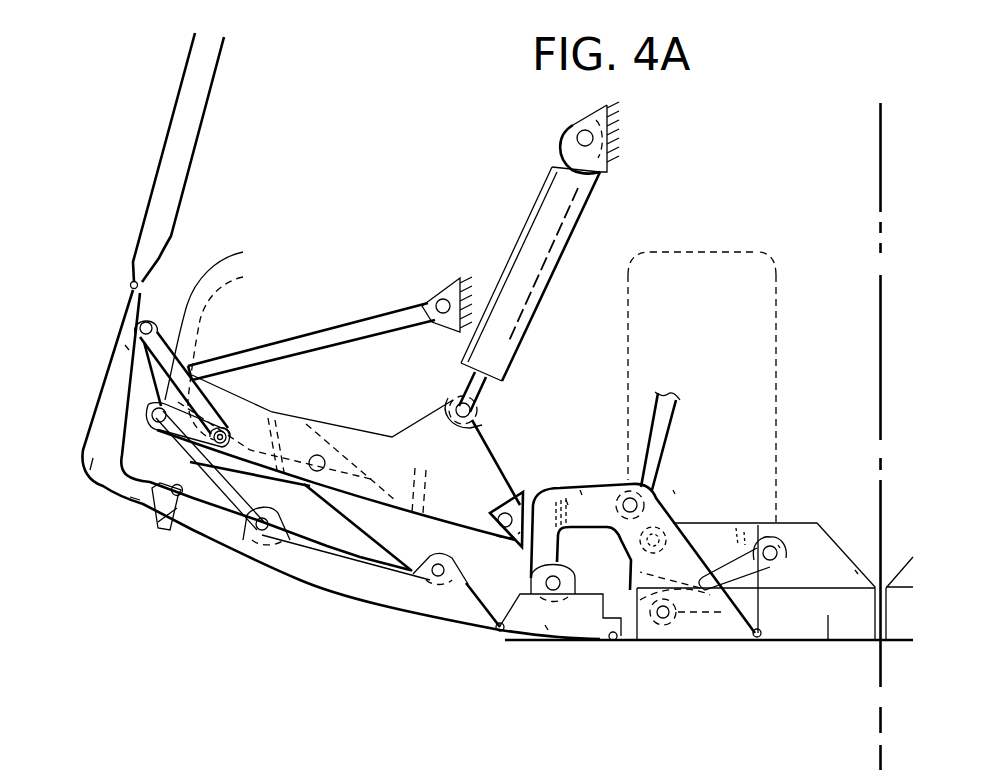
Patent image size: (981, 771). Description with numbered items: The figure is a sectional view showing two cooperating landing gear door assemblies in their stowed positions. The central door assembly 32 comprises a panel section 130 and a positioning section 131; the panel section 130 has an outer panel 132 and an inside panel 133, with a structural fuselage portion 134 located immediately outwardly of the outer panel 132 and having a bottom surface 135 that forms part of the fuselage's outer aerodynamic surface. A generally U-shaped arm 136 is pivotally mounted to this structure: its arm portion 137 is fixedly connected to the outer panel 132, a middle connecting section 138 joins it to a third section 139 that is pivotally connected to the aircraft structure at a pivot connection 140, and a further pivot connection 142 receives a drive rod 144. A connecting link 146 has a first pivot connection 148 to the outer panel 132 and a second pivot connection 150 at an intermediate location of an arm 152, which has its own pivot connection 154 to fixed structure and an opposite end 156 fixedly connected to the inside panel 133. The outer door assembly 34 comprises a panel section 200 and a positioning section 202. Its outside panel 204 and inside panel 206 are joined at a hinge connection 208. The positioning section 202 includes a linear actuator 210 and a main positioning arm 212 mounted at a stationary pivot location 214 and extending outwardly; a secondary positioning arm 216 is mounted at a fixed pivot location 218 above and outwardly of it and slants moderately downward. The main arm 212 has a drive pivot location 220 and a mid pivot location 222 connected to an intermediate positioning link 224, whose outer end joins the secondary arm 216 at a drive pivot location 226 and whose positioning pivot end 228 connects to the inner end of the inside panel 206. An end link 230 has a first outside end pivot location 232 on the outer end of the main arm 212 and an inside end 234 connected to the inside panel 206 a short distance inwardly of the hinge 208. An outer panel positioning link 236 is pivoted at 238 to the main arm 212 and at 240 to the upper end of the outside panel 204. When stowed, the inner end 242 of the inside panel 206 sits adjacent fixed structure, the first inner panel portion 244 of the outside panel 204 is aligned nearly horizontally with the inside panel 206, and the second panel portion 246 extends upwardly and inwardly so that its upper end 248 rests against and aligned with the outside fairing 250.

The door assembly 32 is at (807, 652).
The door assembly 34 is at (244, 573).
The panel section 130 is at (693, 652).
The positioning section 131 is at (692, 525).
The outer panel 132 is at (660, 640).
The inside panel 133 is at (828, 640).
The structural fuselage portion 134 is at (548, 600).
The bottom surface 135 is at (560, 620).
The arm 136 is at (597, 487).
The arm portion 137 is at (673, 490).
The middle connecting section 138 is at (580, 490).
The third section 139 is at (568, 500).
The pivot connection 140 is at (548, 628).
The pivot connection 142 is at (627, 497).
The drive rod 144 is at (668, 413).
The connecting link 146 is at (771, 538).
The first pivot connection 148 is at (656, 618).
The second pivot connection 150 is at (786, 560).
The arm 152 is at (781, 543).
The pivot connection 154 is at (688, 512).
The opposite end 156 is at (858, 572).
The panel section 200 is at (117, 516).
The positioning section 202 is at (351, 318).
The outside panel 204 is at (92, 460).
The inside panel 206 is at (340, 580).
The hinge connection 208 is at (164, 534).
The linear actuator 210 is at (545, 207).
The main positioning arm 212 is at (317, 455).
The pivot location 214 is at (497, 517).
The secondary positioning arm 216 is at (250, 366).
The pivot location 218 is at (436, 301).
The drive pivot location 220 is at (459, 401).
The mid pivot location 222 is at (372, 447).
The intermediate positioning link 224 is at (370, 532).
The drive pivot location 226 is at (239, 352).
The positioning pivot end 228 is at (432, 582).
The end link 230 is at (220, 478).
The first outside end pivot location 232 is at (150, 403).
The link 234 is at (258, 537).
The outer panel positioning link 236 is at (215, 335).
The pivot connection 238 is at (135, 497).
The pivot connection 240 is at (142, 325).
The inner end 242 is at (495, 631).
The first inner panel portion 244 is at (152, 520).
The second panel portion 246 is at (128, 345).
The upper end 248 is at (131, 290).
The outside fairing 250 is at (183, 97).